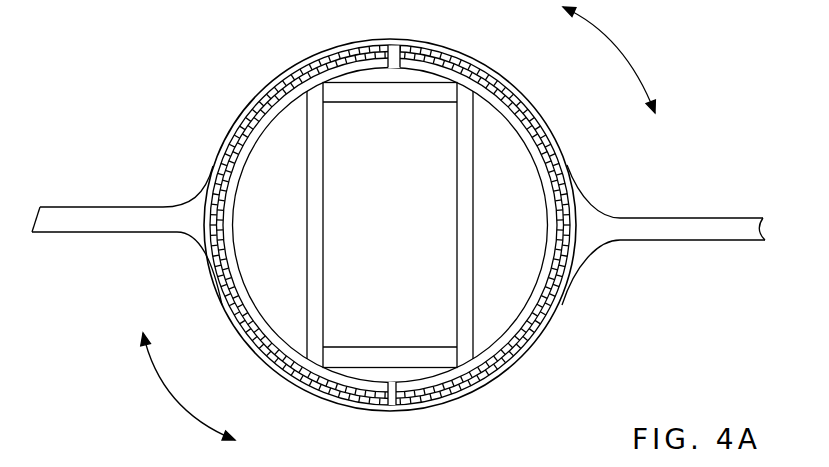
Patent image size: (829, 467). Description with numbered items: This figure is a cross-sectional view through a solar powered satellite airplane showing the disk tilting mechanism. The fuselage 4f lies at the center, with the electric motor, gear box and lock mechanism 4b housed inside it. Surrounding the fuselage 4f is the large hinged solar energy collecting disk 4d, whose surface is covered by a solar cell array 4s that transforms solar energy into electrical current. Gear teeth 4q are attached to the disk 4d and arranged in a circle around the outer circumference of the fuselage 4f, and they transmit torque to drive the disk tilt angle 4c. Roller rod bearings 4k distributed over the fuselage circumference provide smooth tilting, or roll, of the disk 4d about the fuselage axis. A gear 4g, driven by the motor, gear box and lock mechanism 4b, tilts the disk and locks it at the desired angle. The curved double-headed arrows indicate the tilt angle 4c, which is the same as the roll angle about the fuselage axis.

The solar cell array 4s is at (253, 97).
The solar energy collecting disk 4d is at (271, 80).
The gear teeth 4q is at (538, 107).
The roller rod bearings 4k is at (237, 324).
The gear to tilt and lock disk 4g is at (396, 50).
The fuselage 4f is at (313, 143).
The electric motor, gear box and lock mechanism 4b is at (407, 90).
The disk tilt angle 4c is at (398, 223).